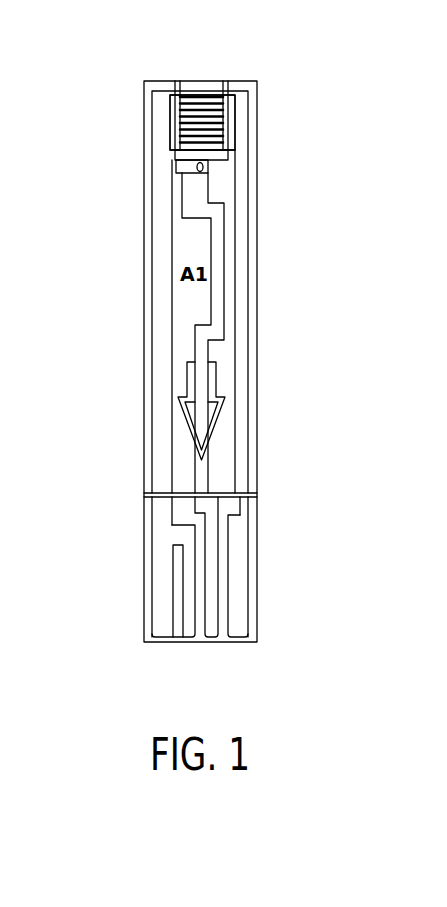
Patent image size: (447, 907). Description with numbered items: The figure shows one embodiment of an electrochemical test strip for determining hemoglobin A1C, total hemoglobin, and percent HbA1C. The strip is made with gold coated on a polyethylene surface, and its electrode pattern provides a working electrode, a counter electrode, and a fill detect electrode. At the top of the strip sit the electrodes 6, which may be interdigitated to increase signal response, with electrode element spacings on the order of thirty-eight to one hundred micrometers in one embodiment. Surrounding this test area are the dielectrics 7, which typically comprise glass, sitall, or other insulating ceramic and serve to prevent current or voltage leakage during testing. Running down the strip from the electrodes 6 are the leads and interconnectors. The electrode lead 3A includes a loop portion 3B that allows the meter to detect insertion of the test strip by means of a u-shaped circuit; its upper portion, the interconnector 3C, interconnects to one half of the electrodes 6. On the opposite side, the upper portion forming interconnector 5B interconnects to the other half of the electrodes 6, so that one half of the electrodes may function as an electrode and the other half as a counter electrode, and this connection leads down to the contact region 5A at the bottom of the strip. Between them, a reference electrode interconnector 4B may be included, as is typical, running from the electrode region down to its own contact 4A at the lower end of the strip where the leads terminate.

The dielectrics 7 is at (185, 92).
The electrodes 6 is at (225, 121).
The interconnector 3C is at (165, 155).
The loop portion 3B is at (187, 532).
The reference electrode interconnector 4B is at (217, 250).
The interconnector 5B is at (240, 190).
The electrode lead 3A is at (167, 620).
The second terminal 4A is at (212, 625).
The third terminal 5A is at (237, 533).